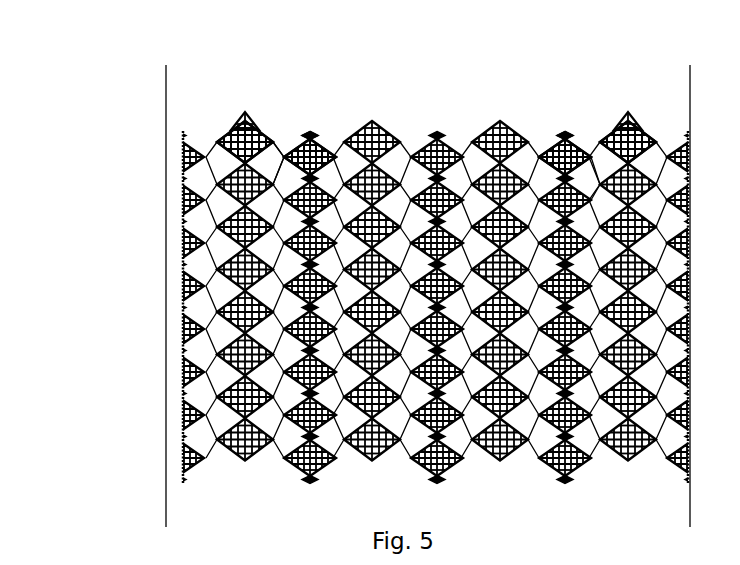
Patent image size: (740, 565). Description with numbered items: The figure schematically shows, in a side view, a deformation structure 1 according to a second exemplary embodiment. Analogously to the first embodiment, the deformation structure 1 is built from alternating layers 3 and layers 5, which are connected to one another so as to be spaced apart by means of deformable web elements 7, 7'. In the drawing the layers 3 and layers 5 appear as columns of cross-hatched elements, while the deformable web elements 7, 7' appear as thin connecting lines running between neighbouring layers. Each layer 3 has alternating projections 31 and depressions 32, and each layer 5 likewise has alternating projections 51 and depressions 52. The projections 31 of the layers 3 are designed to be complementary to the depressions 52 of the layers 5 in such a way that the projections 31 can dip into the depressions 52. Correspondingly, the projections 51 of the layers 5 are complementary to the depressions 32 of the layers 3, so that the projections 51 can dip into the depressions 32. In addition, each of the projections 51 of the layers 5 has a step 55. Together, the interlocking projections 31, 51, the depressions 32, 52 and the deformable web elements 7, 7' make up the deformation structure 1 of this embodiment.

The deformation structure 1 is at (93, 107).
The layer 3 is at (193, 475).
The layer 5 is at (247, 460).
The deformable web element 7 is at (403, 331).
The deformable web element 7' is at (470, 329).
The projection 31 is at (290, 175).
The depression 32 is at (315, 132).
The projection 51 is at (266, 145).
The depression 52 is at (245, 114).
The step 55 is at (282, 150).